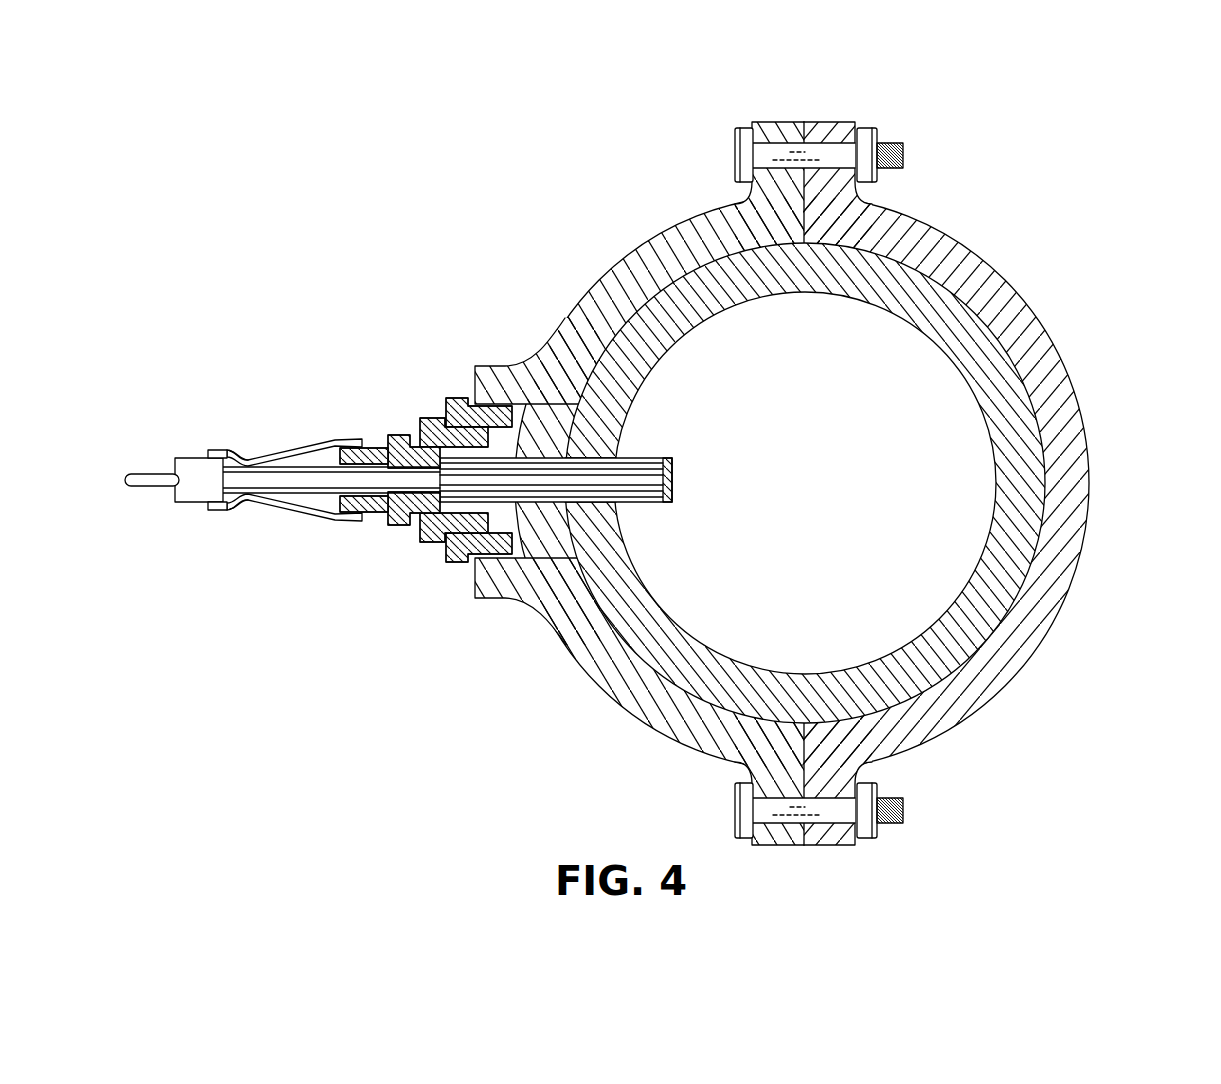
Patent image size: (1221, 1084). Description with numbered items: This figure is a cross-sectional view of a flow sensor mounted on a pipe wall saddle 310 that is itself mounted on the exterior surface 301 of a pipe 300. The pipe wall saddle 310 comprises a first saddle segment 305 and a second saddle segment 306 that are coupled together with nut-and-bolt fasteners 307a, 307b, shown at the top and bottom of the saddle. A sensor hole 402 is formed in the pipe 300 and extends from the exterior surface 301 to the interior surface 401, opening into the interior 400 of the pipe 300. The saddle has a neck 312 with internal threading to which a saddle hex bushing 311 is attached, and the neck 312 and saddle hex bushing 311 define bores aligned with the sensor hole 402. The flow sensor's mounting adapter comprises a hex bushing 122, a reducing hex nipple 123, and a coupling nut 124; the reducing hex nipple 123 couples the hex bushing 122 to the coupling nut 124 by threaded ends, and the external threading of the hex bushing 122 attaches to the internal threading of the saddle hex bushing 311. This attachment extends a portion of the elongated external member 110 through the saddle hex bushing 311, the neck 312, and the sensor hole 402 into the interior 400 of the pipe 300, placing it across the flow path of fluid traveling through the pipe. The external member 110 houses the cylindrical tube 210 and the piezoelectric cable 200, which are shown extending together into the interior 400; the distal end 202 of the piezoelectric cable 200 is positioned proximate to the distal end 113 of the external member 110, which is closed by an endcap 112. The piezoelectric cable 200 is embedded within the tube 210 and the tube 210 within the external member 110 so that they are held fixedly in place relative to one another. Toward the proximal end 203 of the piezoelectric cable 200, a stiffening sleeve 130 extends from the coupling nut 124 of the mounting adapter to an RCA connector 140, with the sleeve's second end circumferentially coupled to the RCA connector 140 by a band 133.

The pipe 300 is at (823, 483).
The exterior surface 301 is at (809, 444).
The first saddle segment 305 is at (635, 483).
The second saddle segment 306 is at (1012, 285).
The pipe wall saddle 310 is at (1090, 463).
The nut-and-bolt fastener 307a is at (745, 128).
The nut-and-bolt fastener 307b is at (742, 840).
The interior 400 is at (833, 520).
The interior surface 401 is at (903, 320).
The sensor hole 402 is at (598, 447).
The external member 110 is at (603, 480).
The distal end 202 is at (640, 457).
The cylindrical tube 210 is at (637, 503).
The endcap 112 is at (673, 474).
The distal end 113 is at (672, 502).
The saddle hex bushing 311 is at (460, 397).
The neck 312 is at (497, 599).
The hex bushing 122 is at (430, 543).
The reducing hex nipple 123 is at (402, 526).
The coupling nut 124 is at (378, 513).
The stiffening sleeve 130 is at (286, 445).
The band 133 is at (244, 455).
The piezoelectric cable 200 is at (290, 491).
The proximal end 203 is at (228, 511).
The RCA connector 140 is at (180, 458).